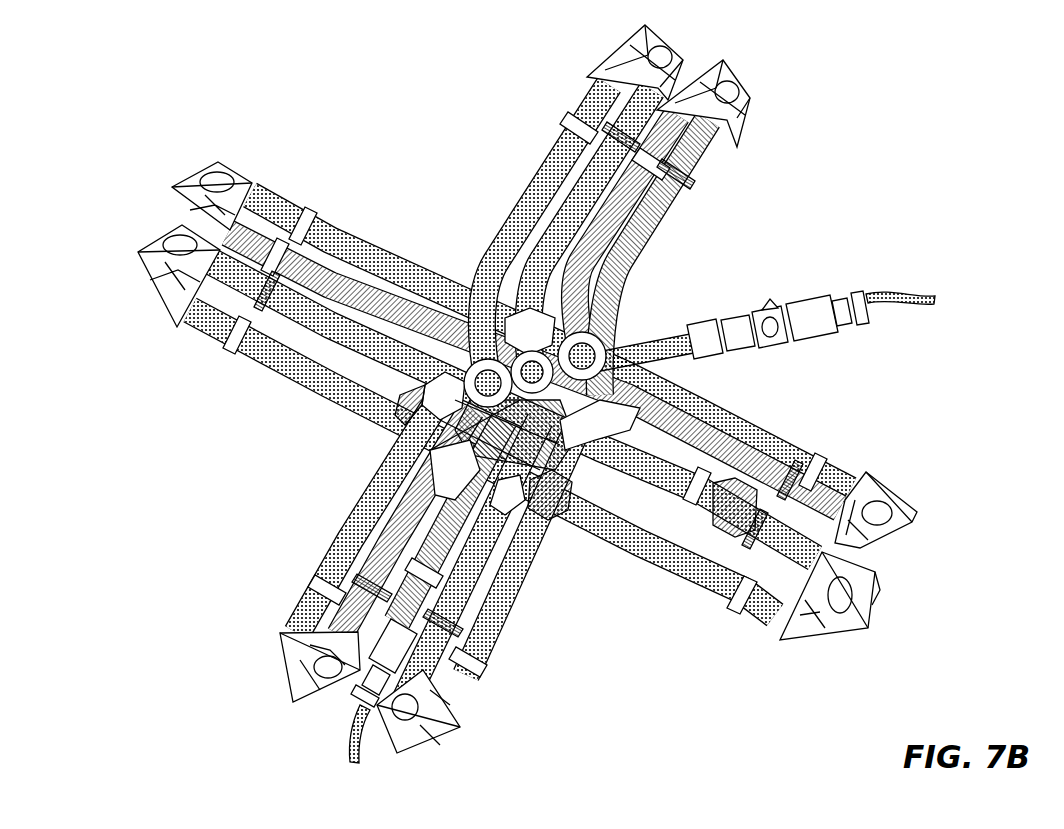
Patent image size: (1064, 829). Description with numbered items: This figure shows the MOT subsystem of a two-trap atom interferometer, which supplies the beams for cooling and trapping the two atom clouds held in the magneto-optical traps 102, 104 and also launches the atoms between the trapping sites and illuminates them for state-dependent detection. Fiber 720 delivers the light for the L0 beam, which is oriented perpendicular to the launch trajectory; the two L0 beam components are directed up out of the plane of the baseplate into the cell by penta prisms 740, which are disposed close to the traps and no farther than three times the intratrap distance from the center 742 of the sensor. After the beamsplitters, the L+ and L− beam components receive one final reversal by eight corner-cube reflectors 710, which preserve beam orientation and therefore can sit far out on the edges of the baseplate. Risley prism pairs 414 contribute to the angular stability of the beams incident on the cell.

The magneto-optical trap 102 is at (480, 385).
The magneto-optical trap 104 is at (588, 352).
The Risley prism pairs 414 is at (575, 130).
The corner-cube reflectors 710 is at (735, 68).
The fiber 720 is at (888, 293).
The penta prisms 740 is at (586, 550).
The center 742 is at (531, 372).